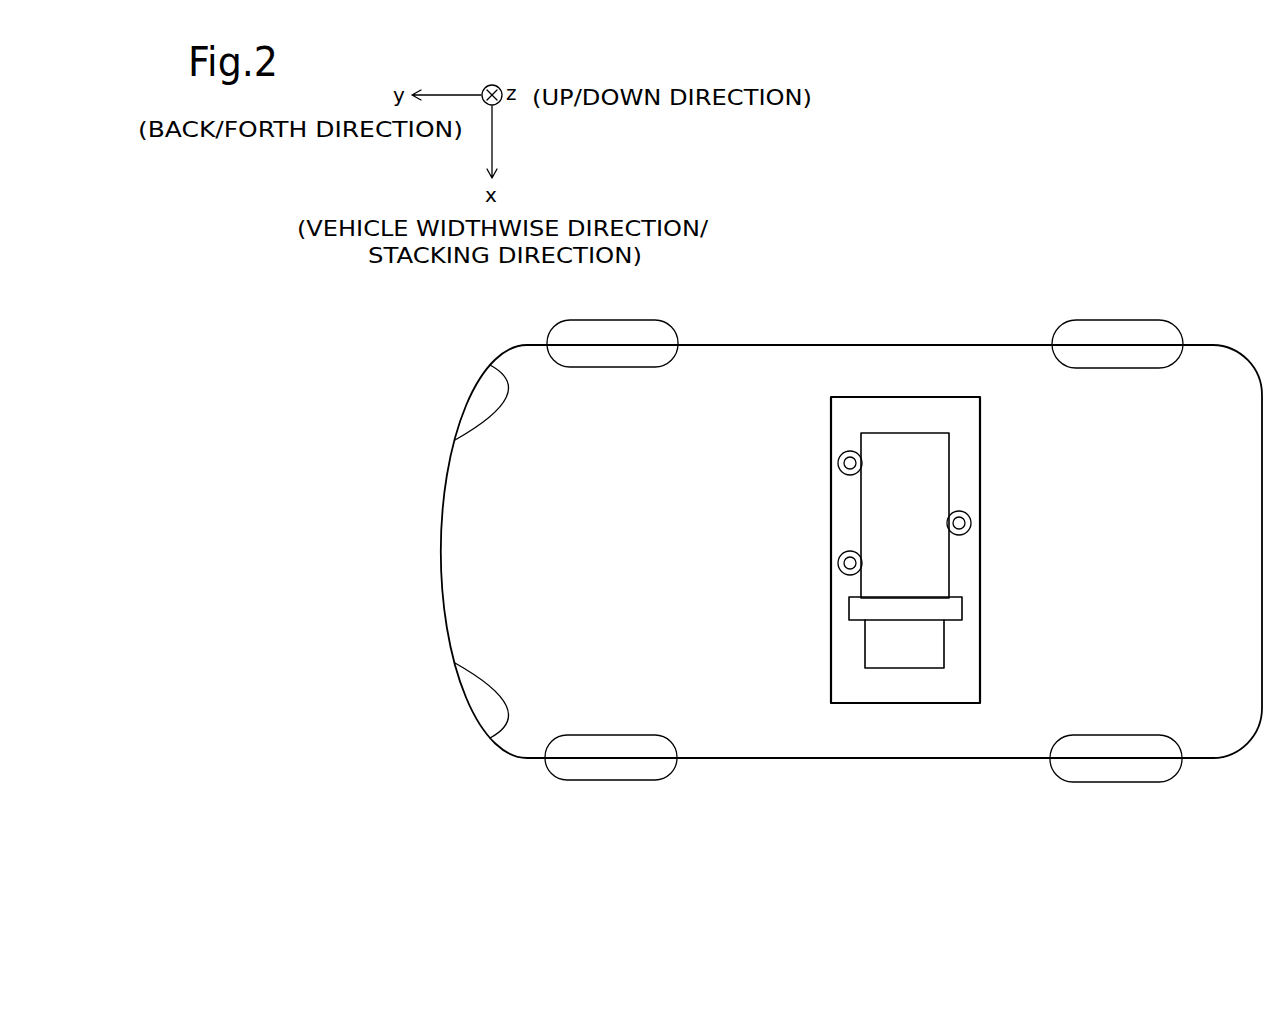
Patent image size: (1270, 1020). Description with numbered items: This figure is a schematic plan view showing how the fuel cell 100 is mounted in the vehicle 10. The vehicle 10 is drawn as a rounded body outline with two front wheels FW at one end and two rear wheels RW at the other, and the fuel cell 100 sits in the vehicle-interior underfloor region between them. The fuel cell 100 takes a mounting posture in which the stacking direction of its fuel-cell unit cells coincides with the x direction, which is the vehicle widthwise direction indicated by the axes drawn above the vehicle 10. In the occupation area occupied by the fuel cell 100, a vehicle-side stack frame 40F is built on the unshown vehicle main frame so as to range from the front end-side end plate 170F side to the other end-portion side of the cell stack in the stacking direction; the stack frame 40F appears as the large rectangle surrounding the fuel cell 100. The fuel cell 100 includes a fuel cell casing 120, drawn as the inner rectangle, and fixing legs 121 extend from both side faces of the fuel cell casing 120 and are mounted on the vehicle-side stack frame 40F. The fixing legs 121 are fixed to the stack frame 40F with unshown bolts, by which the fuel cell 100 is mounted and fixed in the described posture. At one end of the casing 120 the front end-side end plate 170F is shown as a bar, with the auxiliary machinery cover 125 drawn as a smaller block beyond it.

The vehicle 10 is at (999, 262).
The front wheel FW is at (641, 320).
The rear wheel RW is at (1138, 320).
The vehicle-side stack frame 40F is at (843, 428).
The fuel cell 100 is at (950, 458).
The fuel cell casing 120 is at (940, 560).
The fixing legs 121 is at (842, 472).
The auxiliary machinery cover 125 is at (940, 642).
The front end-side end plate 170F is at (963, 608).